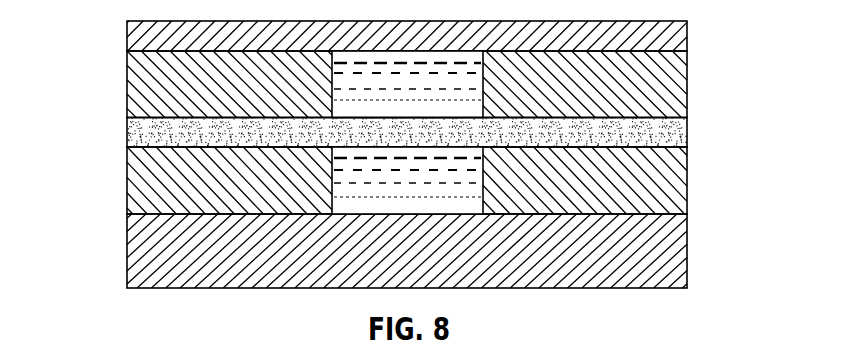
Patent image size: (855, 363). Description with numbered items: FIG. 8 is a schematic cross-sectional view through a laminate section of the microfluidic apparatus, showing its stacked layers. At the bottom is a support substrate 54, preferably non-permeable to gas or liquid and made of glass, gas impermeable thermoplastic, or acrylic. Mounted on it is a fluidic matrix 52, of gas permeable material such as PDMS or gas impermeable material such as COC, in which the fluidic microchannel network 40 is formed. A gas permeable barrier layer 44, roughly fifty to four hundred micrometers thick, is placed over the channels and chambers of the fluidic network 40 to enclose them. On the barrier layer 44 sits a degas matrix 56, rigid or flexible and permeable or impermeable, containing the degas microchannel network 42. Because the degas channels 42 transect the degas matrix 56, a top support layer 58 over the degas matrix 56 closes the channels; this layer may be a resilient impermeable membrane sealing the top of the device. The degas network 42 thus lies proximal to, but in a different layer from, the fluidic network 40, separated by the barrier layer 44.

The fluidic microchannel network 40 is at (417, 190).
The degas microchannel network 42 is at (453, 93).
The gas permeable barrier layer 44 is at (127, 130).
The fluidic matrix 52 is at (127, 185).
The support substrate 54 is at (127, 260).
The degas matrix 56 is at (127, 83).
The top support layer 58 is at (127, 33).